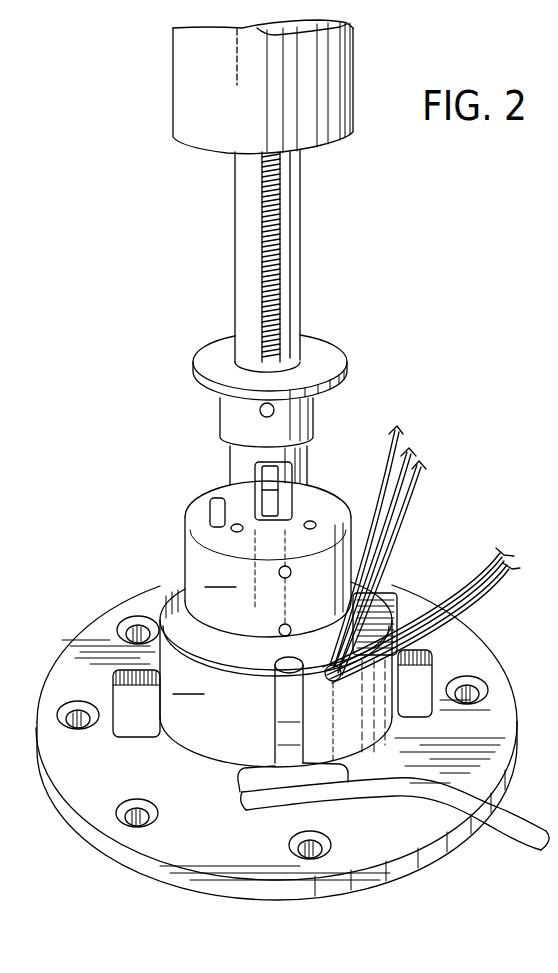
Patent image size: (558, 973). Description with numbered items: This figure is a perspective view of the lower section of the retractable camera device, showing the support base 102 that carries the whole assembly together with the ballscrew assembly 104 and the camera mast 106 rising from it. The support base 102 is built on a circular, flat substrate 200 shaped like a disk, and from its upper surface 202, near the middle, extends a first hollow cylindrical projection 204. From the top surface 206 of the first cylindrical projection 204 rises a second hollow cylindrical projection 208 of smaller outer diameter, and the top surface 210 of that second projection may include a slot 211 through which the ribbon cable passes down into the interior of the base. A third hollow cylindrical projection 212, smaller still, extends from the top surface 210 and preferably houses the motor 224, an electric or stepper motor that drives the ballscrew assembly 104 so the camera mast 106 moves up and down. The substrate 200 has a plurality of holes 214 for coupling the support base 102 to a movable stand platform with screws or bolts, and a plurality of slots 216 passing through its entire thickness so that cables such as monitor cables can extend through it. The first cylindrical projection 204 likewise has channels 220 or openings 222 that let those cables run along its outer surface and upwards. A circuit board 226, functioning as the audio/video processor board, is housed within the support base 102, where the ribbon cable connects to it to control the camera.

The support base 102 is at (519, 694).
The ballscrew assembly 104 is at (300, 313).
The camera mast 106 is at (186, 77).
The circular flat substrate 200 is at (405, 842).
The upper surface 202 is at (175, 850).
The first hollow cylindrical projection 204 is at (299, 653).
The top surface of the first cylindrical projection 206 is at (376, 593).
The second hollow cylindrical projection 208 is at (243, 559).
The top surface of the second cylindrical projection 210 is at (333, 497).
The slot 211 is at (206, 512).
The third hollow cylindrical projection 212 is at (312, 441).
The holes 214 is at (130, 812).
The slots 216 is at (440, 655).
The channels 220 is at (275, 688).
The openings 222 is at (333, 681).
The motor 224 is at (255, 487).
The circuit board 226 is at (277, 733).